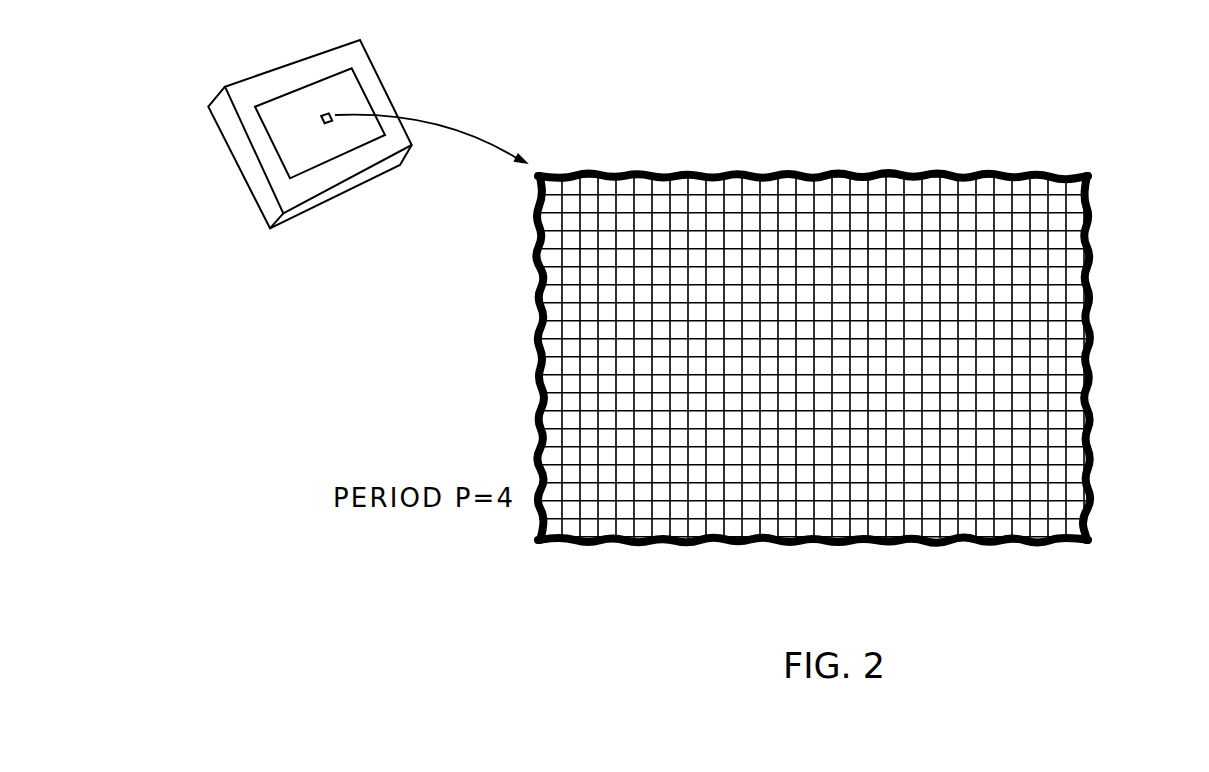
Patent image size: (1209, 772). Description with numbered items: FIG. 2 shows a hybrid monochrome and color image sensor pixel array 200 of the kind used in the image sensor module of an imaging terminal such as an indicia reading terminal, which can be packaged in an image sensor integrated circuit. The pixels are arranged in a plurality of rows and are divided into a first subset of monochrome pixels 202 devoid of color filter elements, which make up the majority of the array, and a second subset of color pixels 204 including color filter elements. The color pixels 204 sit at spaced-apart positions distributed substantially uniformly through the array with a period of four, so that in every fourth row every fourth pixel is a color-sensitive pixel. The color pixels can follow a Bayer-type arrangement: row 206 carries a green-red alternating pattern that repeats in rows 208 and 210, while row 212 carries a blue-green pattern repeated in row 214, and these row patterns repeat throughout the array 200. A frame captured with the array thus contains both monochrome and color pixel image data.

The hybrid monochrome and color image sensor pixel array 200 is at (348, 95).
The first subset of monochrome pixels 202 is at (588, 315).
The second subset of color pixels 204 is at (600, 417).
The row of pixels 206 is at (1054, 207).
The row of pixels 212 is at (1054, 279).
The row of pixels 210 is at (1054, 352).
The row of pixels 214 is at (1054, 424).
The row of pixels 208 is at (1054, 497).